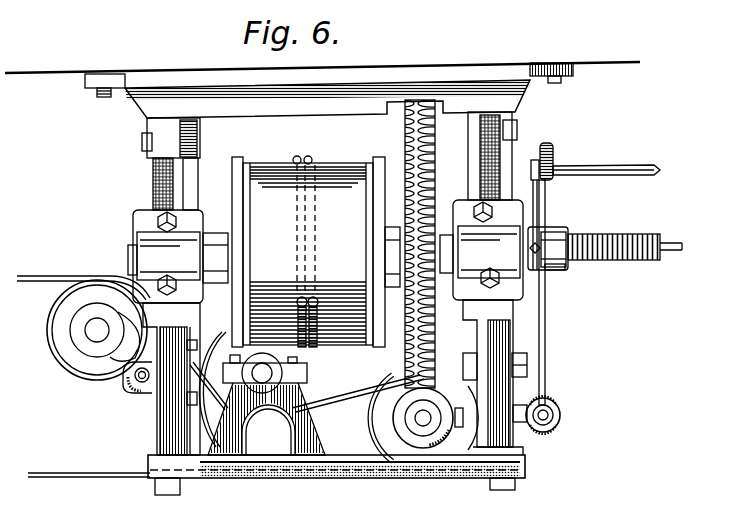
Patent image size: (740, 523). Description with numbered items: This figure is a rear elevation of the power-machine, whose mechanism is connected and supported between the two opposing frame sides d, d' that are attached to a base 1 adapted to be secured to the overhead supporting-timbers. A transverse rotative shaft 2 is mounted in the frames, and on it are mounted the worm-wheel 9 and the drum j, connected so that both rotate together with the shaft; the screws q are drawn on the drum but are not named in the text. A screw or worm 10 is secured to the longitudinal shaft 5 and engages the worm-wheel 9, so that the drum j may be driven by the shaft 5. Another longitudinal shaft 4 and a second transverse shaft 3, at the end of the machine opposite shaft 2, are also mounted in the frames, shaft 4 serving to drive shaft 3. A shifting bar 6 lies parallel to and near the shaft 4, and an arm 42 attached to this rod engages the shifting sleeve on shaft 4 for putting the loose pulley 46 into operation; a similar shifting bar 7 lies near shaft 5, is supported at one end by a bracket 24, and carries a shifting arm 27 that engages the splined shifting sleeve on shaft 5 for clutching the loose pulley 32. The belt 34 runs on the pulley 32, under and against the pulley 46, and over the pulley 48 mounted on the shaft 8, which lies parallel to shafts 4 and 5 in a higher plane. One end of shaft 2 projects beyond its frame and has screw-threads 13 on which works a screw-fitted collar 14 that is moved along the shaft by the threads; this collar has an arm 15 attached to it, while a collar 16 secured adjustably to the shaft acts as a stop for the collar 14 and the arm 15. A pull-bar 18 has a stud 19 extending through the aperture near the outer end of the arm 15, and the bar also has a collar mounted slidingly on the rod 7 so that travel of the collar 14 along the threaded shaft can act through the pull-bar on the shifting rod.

The base 1 is at (142, 110).
The frame d is at (157, 286).
The frame d' is at (503, 277).
The rotative shaft 2 is at (128, 259).
The drum j is at (267, 167).
The screws q is at (297, 308).
The worm-wheel 9 is at (400, 134).
The rotative shaft 5 is at (428, 418).
The pulley 32 is at (373, 435).
The belt 34 is at (23, 283).
The rotative shaft 4 is at (266, 404).
The pulley 46 is at (220, 344).
The shifting bar 6 is at (127, 384).
The arm 42 is at (141, 383).
The shaft 8 is at (96, 336).
The pulley 48 is at (95, 350).
The rotative shaft 3 is at (523, 352).
The arm 15 is at (548, 143).
The pull-bar 18 is at (545, 316).
The stud 19 is at (608, 165).
The screw-fitted collar 14 is at (562, 227).
The collar 16 is at (555, 271).
The screw-threads 13 is at (640, 262).
The shifting bar 7 is at (565, 418).
The bracket 24 is at (558, 405).
The shifting arm 27 is at (553, 432).
The screw or worm 10 is at (455, 456).